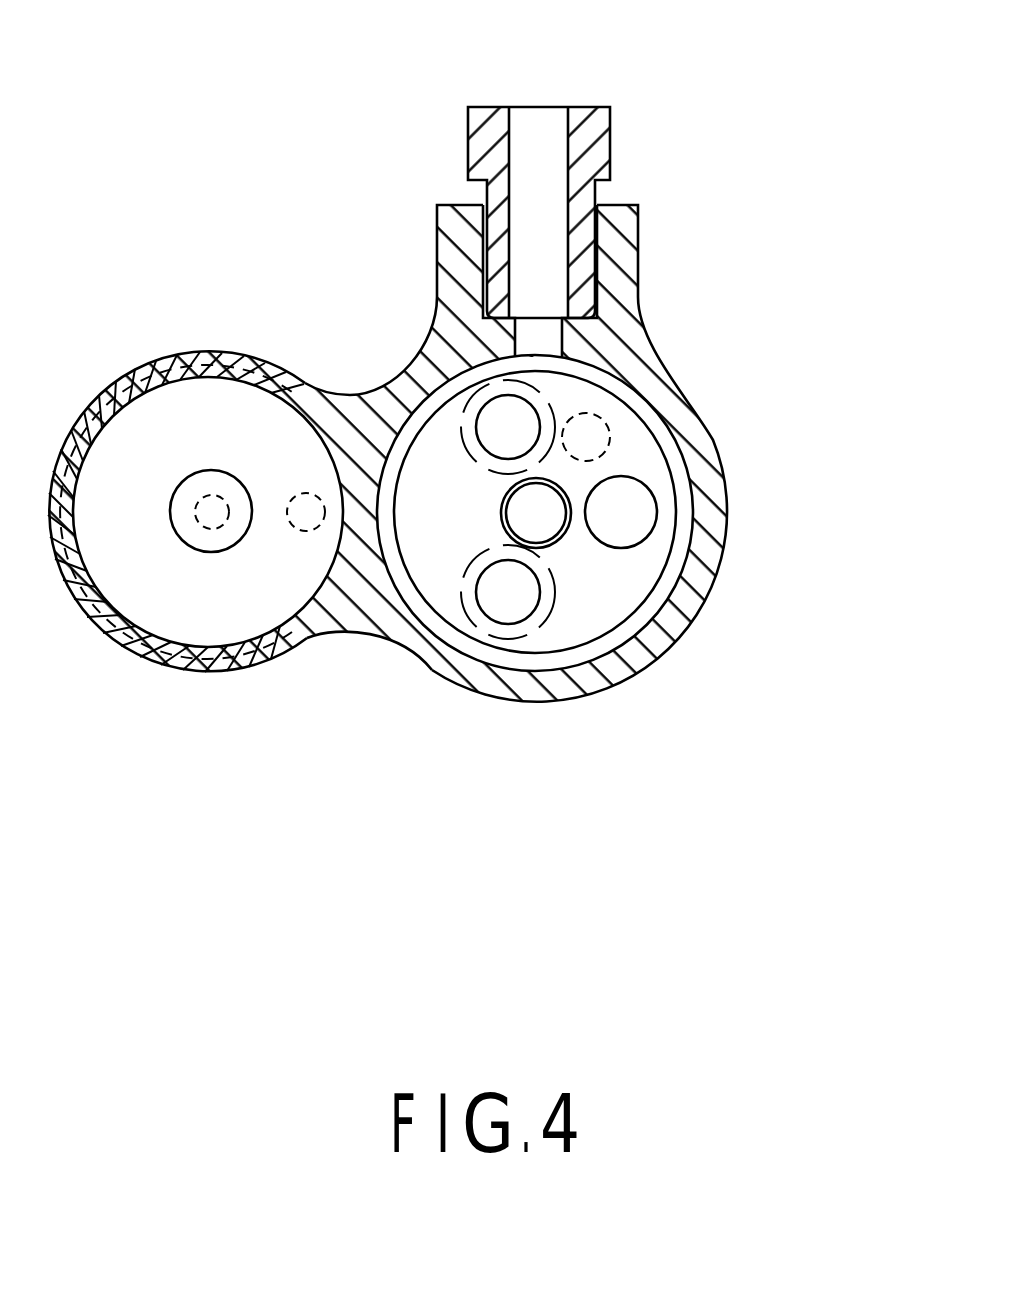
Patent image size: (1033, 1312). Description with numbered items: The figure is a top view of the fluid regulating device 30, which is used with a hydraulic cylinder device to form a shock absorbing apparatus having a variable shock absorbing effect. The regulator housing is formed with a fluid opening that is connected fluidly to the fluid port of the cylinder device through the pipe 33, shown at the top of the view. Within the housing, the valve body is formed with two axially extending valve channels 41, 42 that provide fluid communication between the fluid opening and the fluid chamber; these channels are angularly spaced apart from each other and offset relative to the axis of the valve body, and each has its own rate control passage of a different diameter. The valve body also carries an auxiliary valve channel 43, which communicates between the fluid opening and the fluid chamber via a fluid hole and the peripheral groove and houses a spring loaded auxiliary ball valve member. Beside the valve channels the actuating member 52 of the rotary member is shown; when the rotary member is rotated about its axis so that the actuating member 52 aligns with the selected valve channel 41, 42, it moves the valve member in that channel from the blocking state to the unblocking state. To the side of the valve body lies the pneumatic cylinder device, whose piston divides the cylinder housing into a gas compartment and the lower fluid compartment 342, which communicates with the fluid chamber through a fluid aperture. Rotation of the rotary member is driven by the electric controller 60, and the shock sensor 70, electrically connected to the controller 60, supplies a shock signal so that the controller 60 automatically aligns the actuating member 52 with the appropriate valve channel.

The fluid regulating device 30 is at (297, 338).
The pipe 33 is at (600, 149).
The valve channel 41 is at (484, 404).
The valve channel 42 is at (540, 602).
The auxiliary valve channel 43 is at (628, 507).
The actuating member 52 is at (600, 432).
The electric controller 60 is at (720, 567).
The shock sensor 70 is at (427, 667).
The fluid compartment 342 is at (180, 670).